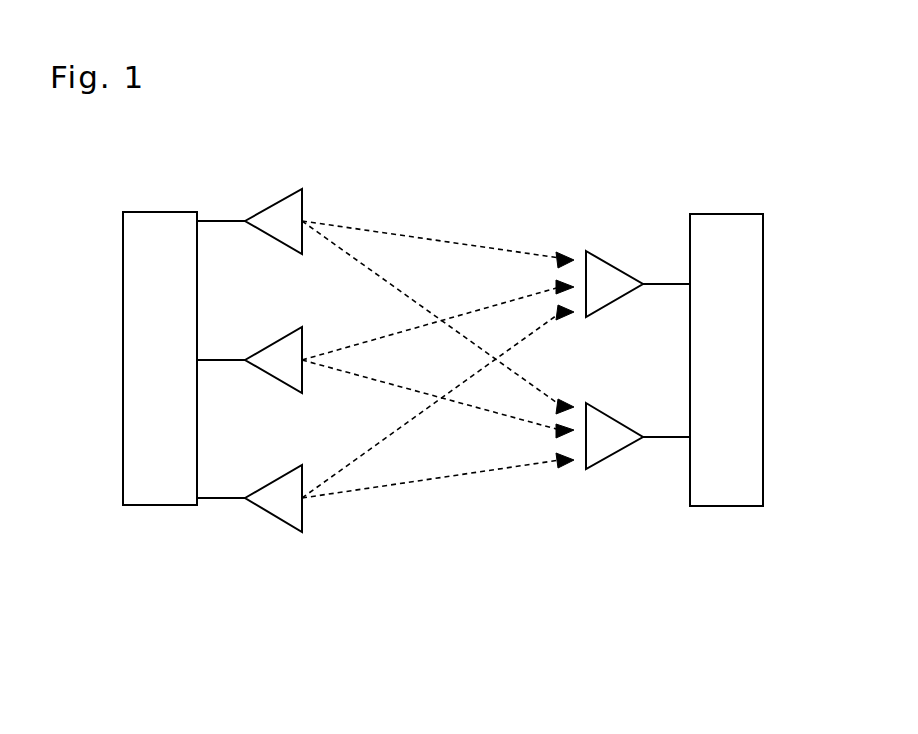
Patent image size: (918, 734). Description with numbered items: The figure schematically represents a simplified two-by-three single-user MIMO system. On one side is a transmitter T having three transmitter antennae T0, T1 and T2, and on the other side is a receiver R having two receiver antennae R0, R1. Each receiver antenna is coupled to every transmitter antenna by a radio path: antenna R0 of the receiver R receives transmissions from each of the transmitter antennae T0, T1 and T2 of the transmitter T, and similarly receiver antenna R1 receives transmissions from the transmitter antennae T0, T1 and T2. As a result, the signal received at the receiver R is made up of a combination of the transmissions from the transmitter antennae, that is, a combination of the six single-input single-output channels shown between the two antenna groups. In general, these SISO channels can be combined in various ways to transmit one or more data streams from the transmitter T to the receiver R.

The transmitter T is at (167, 371).
The receiver R is at (735, 371).
The transmitter antenna T0 is at (249, 221).
The transmitter antenna T1 is at (249, 360).
The transmitter antenna T2 is at (249, 498).
The receiver antenna R0 is at (638, 284).
The receiver antenna R1 is at (638, 436).